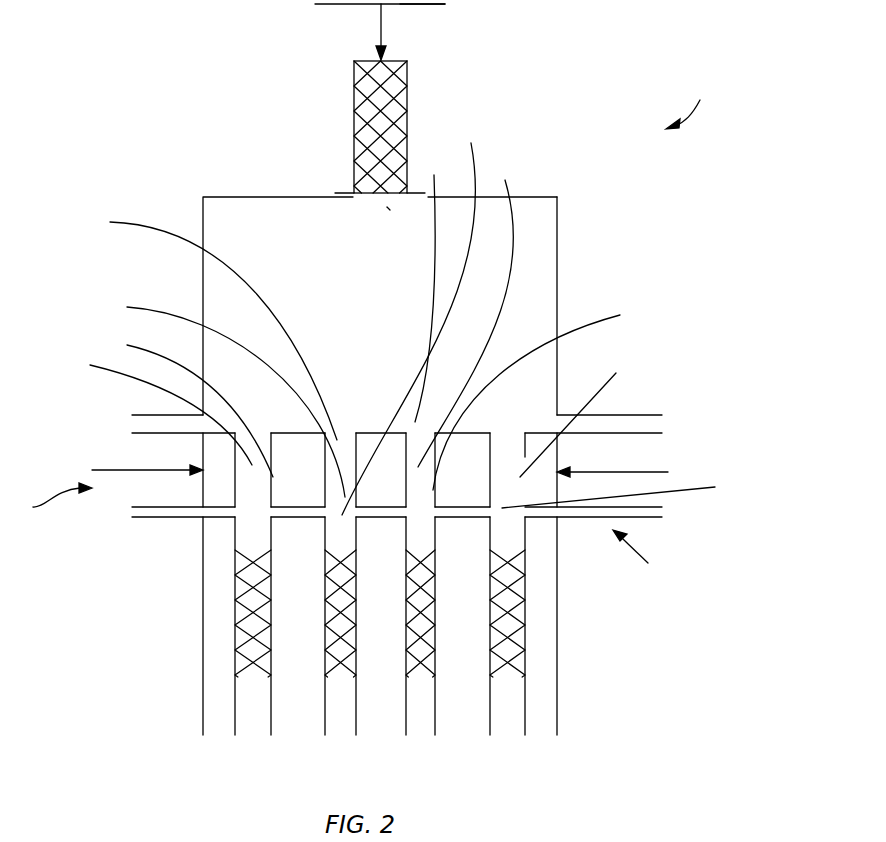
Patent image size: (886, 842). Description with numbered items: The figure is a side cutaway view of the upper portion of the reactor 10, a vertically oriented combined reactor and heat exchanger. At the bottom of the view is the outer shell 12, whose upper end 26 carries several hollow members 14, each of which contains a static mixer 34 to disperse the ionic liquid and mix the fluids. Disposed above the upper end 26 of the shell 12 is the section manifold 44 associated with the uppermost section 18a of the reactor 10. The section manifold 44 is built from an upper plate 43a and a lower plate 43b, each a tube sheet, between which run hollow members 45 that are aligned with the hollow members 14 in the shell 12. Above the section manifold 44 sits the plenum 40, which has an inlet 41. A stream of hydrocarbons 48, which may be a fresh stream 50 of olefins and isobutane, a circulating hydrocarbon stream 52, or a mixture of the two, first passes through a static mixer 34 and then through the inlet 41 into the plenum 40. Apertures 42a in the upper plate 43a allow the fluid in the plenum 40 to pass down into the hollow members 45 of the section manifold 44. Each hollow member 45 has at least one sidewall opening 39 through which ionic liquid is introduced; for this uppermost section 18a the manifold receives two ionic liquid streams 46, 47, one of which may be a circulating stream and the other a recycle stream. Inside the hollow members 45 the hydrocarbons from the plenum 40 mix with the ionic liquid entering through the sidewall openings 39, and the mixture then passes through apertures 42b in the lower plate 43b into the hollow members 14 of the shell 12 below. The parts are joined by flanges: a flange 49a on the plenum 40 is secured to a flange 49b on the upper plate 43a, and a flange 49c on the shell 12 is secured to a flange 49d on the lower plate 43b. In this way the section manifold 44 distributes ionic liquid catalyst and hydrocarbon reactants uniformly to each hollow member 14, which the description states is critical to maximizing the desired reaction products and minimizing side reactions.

The reactor 10 is at (701, 108).
The outer shell 12 is at (558, 560).
The hollow member 14 is at (504, 742).
The uppermost section 18a is at (654, 555).
The upper end 26 is at (203, 530).
The static mixer 34 is at (402, 100).
The sidewall opening 39 is at (374, 395).
The plenum 40 is at (548, 207).
The inlet 41 is at (387, 207).
The apertures in upper plate 42a is at (276, 315).
The apertures in lower plate 42b is at (589, 327).
The upper plate 43a is at (657, 428).
The lower plate 43b is at (660, 510).
The section manifold 44 is at (47, 504).
The hollow members of the section manifold 45 is at (285, 323).
The ionic liquid stream 46 is at (662, 470).
The ionic liquid stream 47 is at (107, 469).
The stream of hydrocarbons 48 is at (383, 33).
The flange on the plenum 49a is at (157, 415).
The flange on the upper plate 49b is at (157, 433).
The flange on the shell 49c is at (143, 517).
The flange on the lower plate 49d is at (187, 505).
The fresh stream 50 is at (346, 4).
The circulating hydrocarbon stream 52 is at (432, 4).